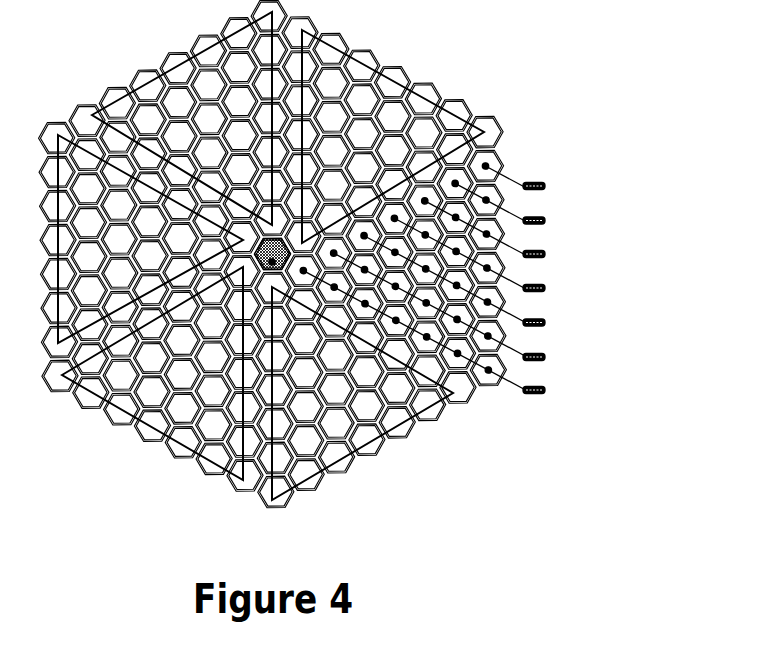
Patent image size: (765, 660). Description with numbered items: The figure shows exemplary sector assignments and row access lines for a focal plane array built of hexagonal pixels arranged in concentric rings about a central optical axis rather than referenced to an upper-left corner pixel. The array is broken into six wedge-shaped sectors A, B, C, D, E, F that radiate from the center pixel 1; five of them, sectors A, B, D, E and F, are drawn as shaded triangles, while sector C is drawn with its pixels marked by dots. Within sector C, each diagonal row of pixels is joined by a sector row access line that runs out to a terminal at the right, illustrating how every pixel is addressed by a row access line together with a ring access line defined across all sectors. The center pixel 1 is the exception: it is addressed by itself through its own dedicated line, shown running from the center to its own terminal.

The center pixel 1 is at (272, 262).
The sector A is at (182, 118).
The sector B is at (393, 136).
The sector C is at (463, 278).
The sector D is at (362, 393).
The sector E is at (152, 373).
The sector F is at (150, 239).